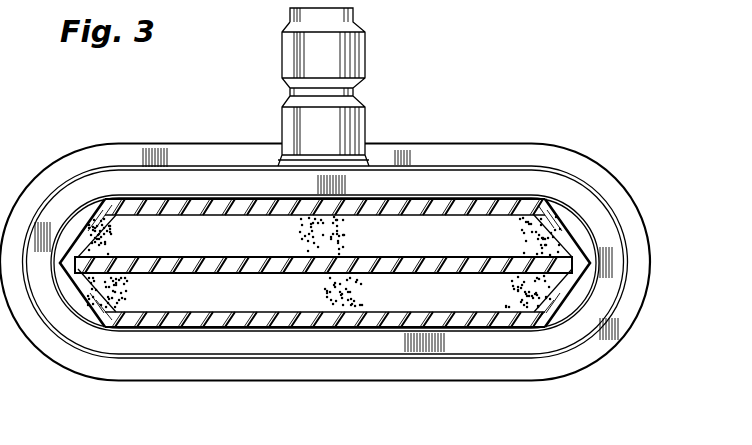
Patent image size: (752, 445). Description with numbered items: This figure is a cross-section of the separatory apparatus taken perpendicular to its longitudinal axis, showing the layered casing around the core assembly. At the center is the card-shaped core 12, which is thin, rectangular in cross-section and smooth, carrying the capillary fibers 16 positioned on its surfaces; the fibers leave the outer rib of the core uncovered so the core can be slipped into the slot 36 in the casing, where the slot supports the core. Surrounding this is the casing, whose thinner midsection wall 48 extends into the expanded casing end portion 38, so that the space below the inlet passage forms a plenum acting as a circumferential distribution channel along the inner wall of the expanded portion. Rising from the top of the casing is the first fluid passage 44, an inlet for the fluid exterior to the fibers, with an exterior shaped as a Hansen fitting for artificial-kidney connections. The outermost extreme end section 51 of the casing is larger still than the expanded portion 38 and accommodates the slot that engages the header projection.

The core 12 is at (160, 262).
The capillary fibers 16 is at (112, 214).
The slot 36 is at (74, 222).
The expanded casing end portion 38 is at (452, 167).
The first fluid passage 44 is at (362, 66).
The wall of the thinner midsection 48 is at (195, 212).
The extreme end section 51 is at (393, 145).